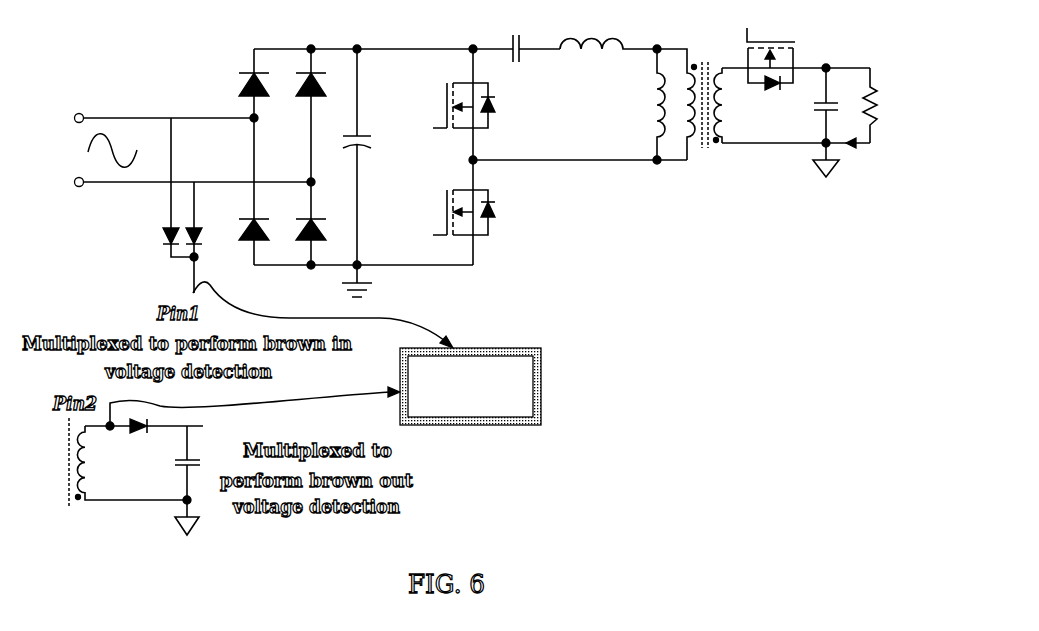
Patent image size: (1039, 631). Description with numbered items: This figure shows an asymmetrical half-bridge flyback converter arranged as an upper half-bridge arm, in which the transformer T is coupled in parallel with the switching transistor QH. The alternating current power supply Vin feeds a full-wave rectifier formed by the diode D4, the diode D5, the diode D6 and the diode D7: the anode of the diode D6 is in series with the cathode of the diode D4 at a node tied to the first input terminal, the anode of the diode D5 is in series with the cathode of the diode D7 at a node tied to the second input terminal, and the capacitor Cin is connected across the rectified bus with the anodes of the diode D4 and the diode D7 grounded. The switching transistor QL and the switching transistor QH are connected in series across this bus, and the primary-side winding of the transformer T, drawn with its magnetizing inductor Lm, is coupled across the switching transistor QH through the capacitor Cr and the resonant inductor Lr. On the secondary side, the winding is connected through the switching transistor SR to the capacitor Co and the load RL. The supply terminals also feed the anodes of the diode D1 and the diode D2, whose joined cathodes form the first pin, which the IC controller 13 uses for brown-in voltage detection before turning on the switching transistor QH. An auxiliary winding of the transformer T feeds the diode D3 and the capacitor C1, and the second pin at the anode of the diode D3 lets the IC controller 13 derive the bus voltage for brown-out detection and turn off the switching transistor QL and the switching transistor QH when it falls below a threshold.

The IC controller 13 is at (542, 385).
The diode D1 is at (167, 187).
The diode D2 is at (203, 237).
The diode D3 is at (158, 441).
The diode D4 is at (244, 247).
The diode D5 is at (302, 101).
The diode D6 is at (239, 96).
The diode D7 is at (299, 241).
The capacitor Cin is at (366, 173).
The capacitor Cr is at (516, 35).
The resonant inductor Lr is at (608, 60).
The magnetizing inductor Lm is at (642, 104).
The transformer T is at (696, 106).
The switching transistor QH is at (453, 104).
The switching transistor QL is at (453, 212).
The switching transistor SR is at (771, 56).
The capacitor Co is at (811, 122).
The load RL is at (878, 108).
The capacitor C1 is at (173, 480).
The alternating current power supply Vin is at (97, 150).